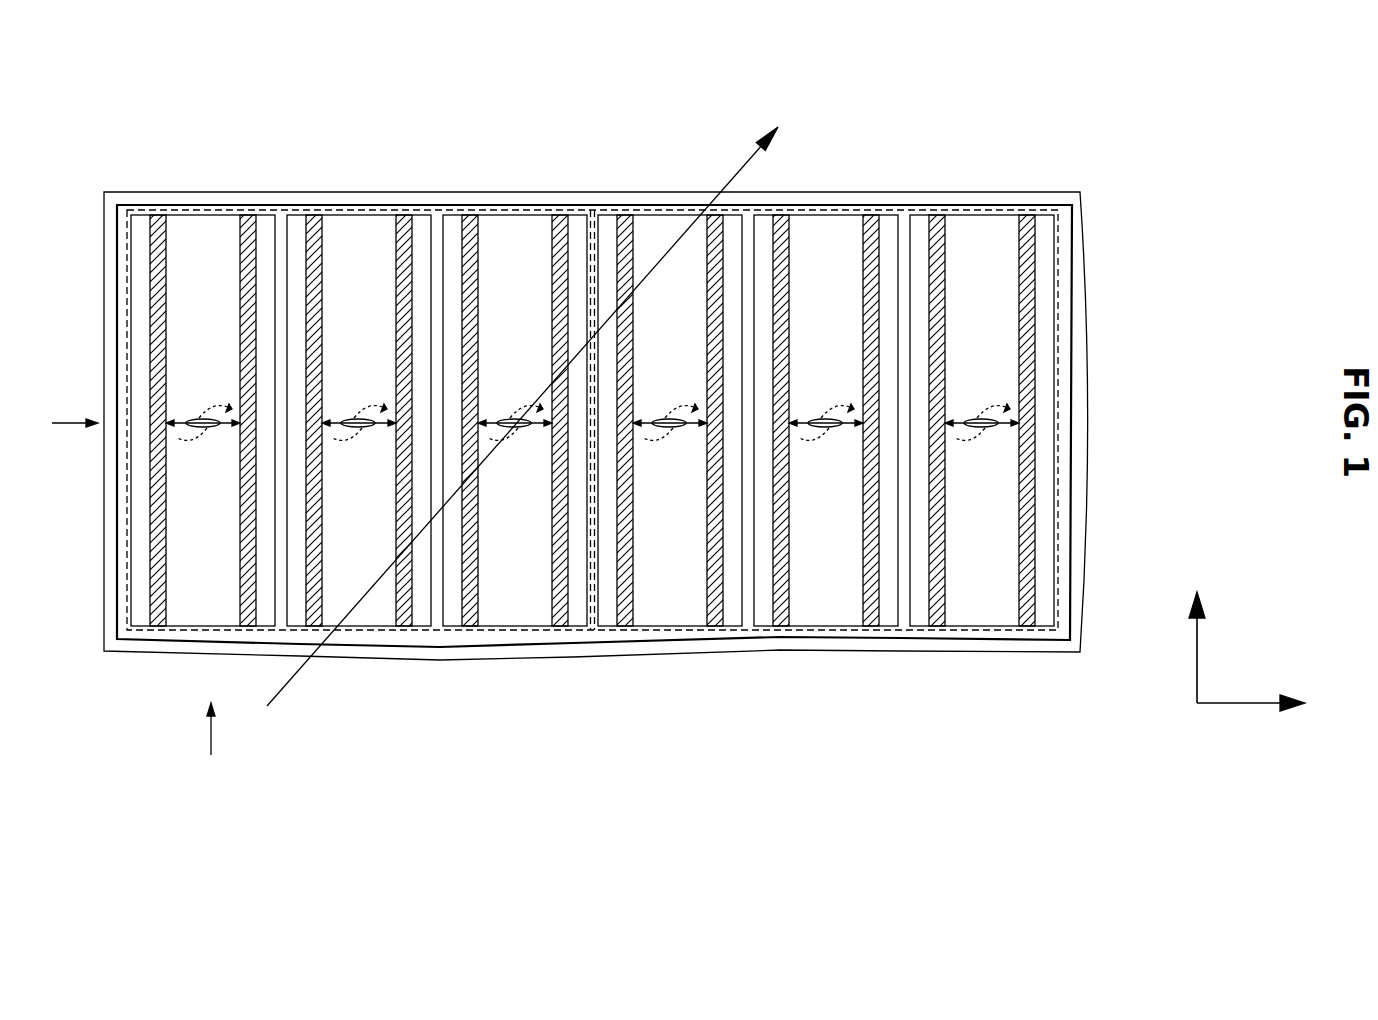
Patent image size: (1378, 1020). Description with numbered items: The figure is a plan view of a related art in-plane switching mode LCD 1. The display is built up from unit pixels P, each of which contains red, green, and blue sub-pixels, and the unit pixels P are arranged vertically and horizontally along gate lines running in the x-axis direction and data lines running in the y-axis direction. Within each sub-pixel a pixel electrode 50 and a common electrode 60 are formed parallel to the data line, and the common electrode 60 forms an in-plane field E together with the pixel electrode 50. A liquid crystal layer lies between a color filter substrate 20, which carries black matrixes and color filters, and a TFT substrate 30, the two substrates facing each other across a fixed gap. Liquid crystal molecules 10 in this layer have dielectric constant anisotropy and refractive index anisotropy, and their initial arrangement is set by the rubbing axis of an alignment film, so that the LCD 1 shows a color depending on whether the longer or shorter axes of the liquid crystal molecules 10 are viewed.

The IPS mode LCD 1 is at (1128, 88).
The liquid crystal molecules 10 is at (372, 430).
The color filter substrate 20 is at (573, 644).
The TFT substrate 30 is at (642, 659).
The pixel electrode 50 is at (167, 544).
The common electrode 60 is at (239, 590).
The unit pixel P is at (277, 207).
The in-plane field E is at (227, 430).